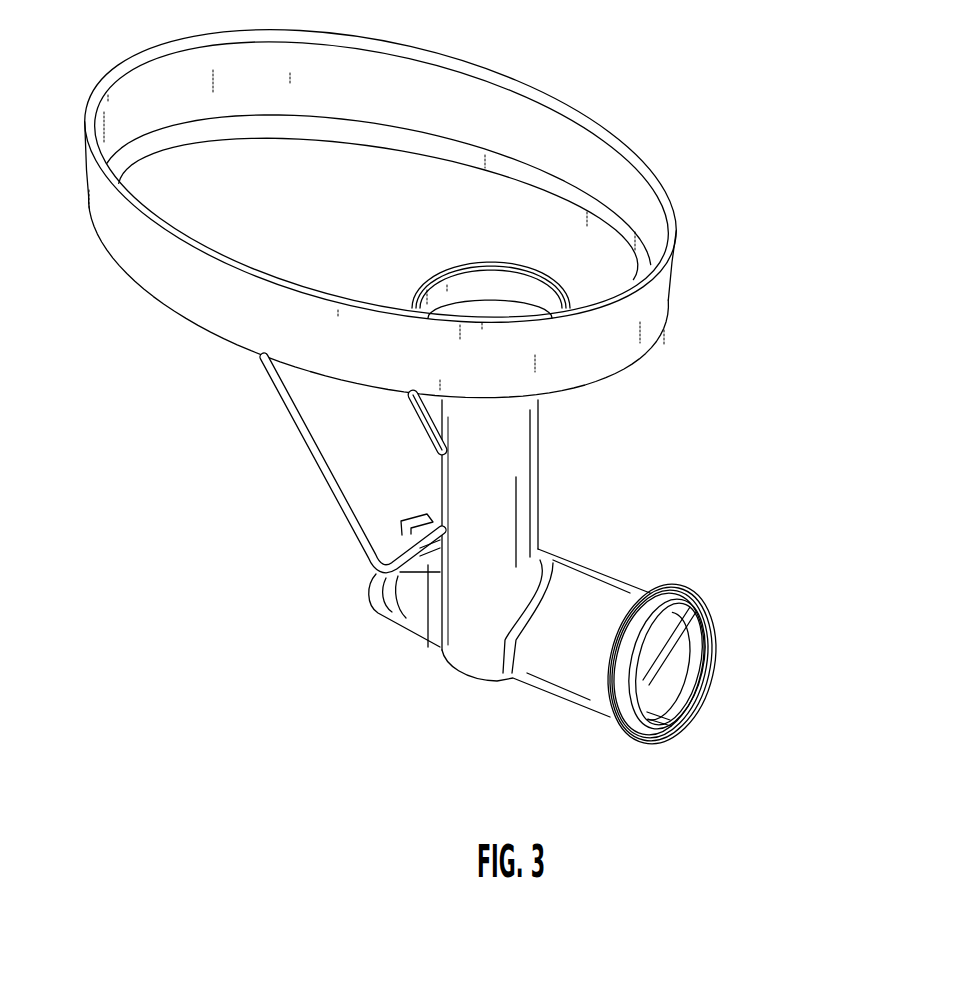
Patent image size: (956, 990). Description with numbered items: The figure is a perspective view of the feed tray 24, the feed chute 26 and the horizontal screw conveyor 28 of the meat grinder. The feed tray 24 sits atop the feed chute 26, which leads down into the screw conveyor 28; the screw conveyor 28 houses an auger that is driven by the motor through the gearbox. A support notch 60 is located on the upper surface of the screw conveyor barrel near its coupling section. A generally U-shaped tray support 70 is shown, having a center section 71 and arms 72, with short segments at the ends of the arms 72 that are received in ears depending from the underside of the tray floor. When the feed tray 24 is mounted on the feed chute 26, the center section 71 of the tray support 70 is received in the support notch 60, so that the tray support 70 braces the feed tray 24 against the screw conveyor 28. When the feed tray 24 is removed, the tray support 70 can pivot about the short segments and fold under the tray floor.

The feed tray 24 is at (700, 302).
The feed chute 26 is at (525, 512).
The horizontal screw conveyor 28 is at (606, 598).
The support notch 60 is at (433, 565).
The tray support 70 is at (354, 566).
The center section 71 is at (386, 610).
The arms 72 is at (343, 504).